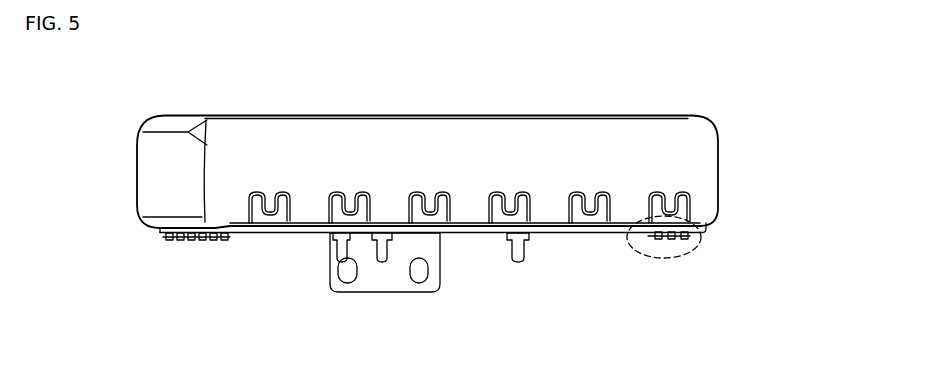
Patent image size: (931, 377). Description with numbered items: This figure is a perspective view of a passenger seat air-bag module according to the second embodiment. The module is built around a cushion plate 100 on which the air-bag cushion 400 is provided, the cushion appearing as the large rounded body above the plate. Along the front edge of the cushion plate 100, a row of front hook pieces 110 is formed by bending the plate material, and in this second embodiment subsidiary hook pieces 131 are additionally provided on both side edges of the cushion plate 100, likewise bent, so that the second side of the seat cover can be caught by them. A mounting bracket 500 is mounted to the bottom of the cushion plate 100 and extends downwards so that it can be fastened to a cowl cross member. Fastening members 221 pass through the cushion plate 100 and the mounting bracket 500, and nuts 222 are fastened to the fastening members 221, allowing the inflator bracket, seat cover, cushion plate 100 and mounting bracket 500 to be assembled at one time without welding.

The cushion plate 100 is at (483, 228).
The front hook piece 110 is at (663, 207).
The subsidiary hook pieces 131 is at (697, 232).
The fastening members 221 is at (340, 253).
The nuts 222 is at (328, 239).
The air-bag cushion 400 is at (688, 167).
The mounting bracket 500 is at (393, 279).